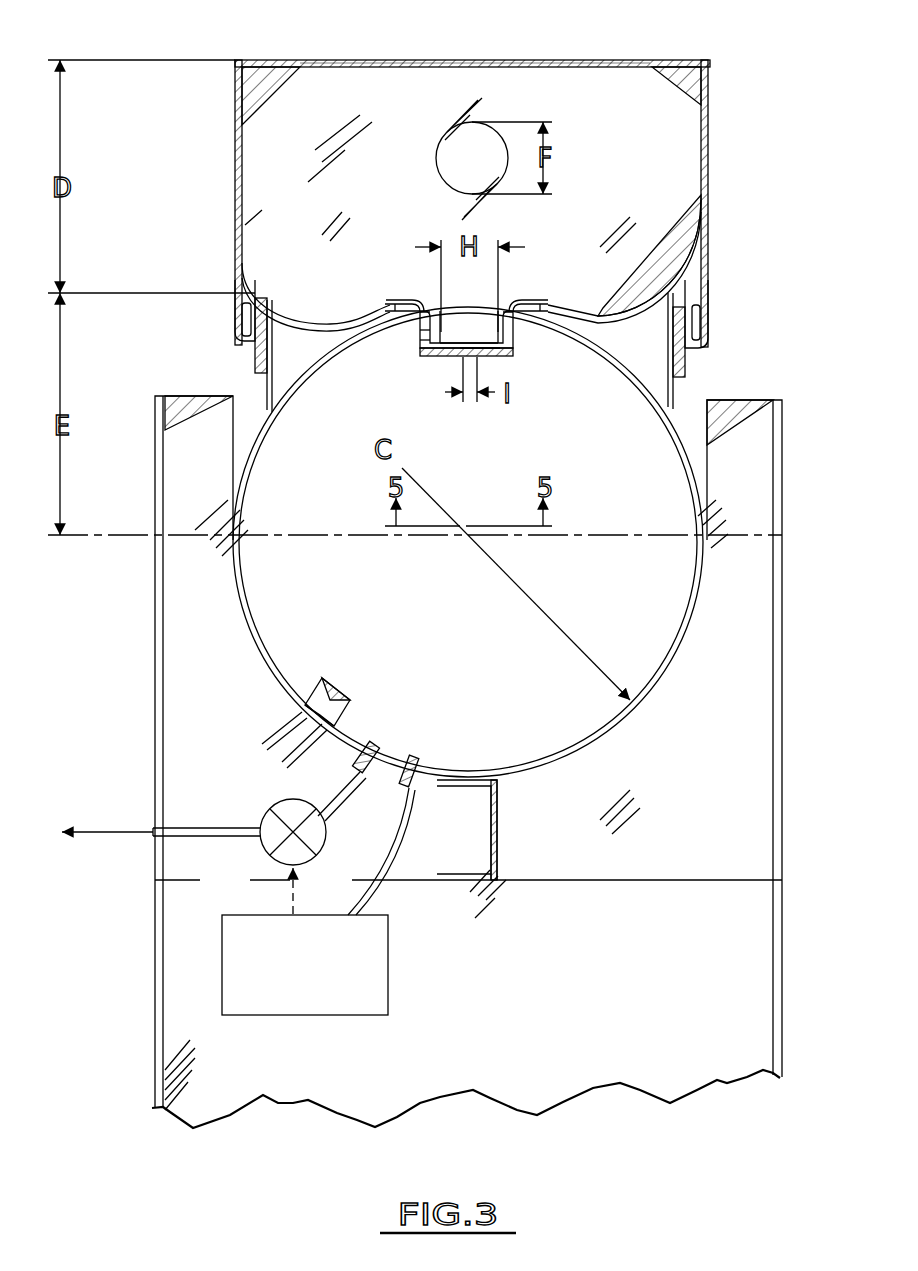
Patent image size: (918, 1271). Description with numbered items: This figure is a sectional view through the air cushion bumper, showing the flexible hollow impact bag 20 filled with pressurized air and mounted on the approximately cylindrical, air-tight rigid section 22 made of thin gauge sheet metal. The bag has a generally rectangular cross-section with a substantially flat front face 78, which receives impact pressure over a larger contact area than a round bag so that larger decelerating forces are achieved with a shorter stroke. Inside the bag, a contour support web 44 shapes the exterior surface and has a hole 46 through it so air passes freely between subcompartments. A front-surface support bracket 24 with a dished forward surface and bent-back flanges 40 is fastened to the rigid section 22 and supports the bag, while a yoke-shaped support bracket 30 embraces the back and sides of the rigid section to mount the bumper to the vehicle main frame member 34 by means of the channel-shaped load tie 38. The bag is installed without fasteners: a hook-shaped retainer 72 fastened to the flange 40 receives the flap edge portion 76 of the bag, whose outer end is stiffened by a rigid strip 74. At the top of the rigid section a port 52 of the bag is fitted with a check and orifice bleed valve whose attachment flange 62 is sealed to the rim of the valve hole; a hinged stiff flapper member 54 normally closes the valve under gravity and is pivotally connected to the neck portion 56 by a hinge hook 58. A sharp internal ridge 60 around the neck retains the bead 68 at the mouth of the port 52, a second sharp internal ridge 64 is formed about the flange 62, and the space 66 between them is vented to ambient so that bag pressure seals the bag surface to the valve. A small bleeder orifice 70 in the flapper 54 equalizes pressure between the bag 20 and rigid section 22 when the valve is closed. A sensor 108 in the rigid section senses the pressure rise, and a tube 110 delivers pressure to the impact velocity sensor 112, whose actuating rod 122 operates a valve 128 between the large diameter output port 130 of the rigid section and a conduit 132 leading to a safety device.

The impact bag 20 is at (234, 154).
The rigid section 22 is at (302, 656).
The front-surface support bracket 24 is at (305, 326).
The support bracket 30 is at (186, 690).
The vehicle main frame member 34 is at (170, 1033).
The load tie 38 is at (500, 833).
The bent-back flange 40 is at (263, 400).
The contour support web 44 is at (528, 83).
The hole 46 is at (436, 158).
The port 52 is at (440, 336).
The flapper member 54 is at (428, 362).
The neck portion 56 is at (426, 335).
The hinge hook 58 is at (428, 356).
The sharp internal ridge 60 is at (428, 340).
The attachment flange 62 is at (416, 324).
The second sharp internal ridge 64 is at (419, 301).
The space 66 is at (519, 322).
The bead 68 is at (510, 349).
The bleeder orifice 70 is at (486, 357).
The hook-shaped retainer 72 is at (255, 372).
The rigid strip 74 is at (250, 341).
The flap edge portion 76 is at (236, 290).
The flat front face 78 is at (644, 60).
The sensor 108 is at (341, 688).
The tube 110 is at (413, 787).
The impact velocity sensor 112 is at (391, 972).
The actuating rod 122 is at (297, 880).
The valve 128 is at (282, 803).
The output port 130 is at (357, 758).
The conduit 132 is at (225, 838).